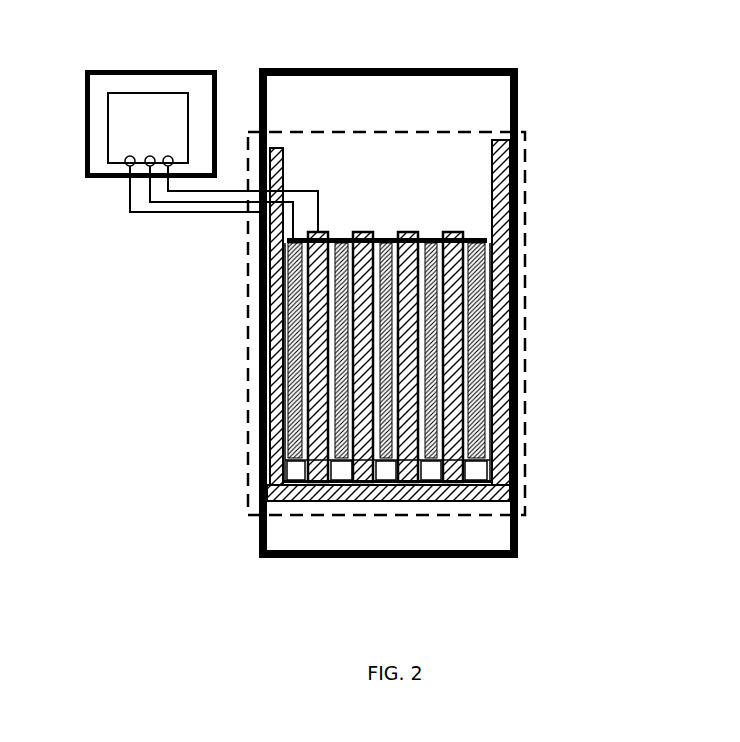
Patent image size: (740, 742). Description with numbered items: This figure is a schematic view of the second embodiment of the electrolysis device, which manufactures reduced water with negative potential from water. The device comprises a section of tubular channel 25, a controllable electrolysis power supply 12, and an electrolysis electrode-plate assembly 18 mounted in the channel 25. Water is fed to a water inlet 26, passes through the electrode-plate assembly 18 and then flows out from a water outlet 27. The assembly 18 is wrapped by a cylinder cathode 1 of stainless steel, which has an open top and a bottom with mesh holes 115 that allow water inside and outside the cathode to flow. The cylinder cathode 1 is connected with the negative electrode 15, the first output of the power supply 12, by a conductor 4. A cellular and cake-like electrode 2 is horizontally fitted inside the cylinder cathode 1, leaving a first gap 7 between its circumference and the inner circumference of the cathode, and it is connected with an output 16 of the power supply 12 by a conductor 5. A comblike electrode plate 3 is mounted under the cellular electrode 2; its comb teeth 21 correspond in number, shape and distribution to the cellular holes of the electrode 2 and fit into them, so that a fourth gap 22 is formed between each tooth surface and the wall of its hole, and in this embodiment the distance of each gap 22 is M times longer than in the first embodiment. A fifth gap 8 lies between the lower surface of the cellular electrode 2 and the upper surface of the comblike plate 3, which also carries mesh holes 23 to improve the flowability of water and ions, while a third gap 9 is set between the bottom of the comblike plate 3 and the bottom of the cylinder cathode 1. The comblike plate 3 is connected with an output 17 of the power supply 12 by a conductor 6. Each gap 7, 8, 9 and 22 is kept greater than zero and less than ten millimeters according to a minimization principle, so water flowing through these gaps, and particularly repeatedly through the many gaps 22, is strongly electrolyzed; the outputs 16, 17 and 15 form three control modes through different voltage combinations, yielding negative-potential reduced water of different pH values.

The cylinder cathode 1 is at (518, 120).
The cellular and cake-like electrode 2 is at (517, 347).
The comblike electrode plate 3 is at (517, 417).
The conductor 4 is at (128, 191).
The conductor 5 is at (145, 202).
The conductor 6 is at (177, 195).
The first gap 7 is at (260, 385).
The fifth gap 8 is at (262, 428).
The third gap 9 is at (262, 452).
The controllable electrolysis power supply 12 is at (137, 85).
The negative electrode output 15 is at (134, 157).
The output of the controllable power supply 16 is at (154, 157).
The output of the controllable power supply 17 is at (172, 157).
The electrolysis electrode-plate assembly 18 is at (413, 130).
The comb teeth 21 is at (260, 285).
The fourth gap 22 is at (257, 350).
The mesh holes 23 is at (312, 502).
The tubular channel 25 is at (515, 465).
The water inlet 26 is at (363, 95).
The water outlet 27 is at (450, 532).
The mesh holes 115 is at (453, 490).